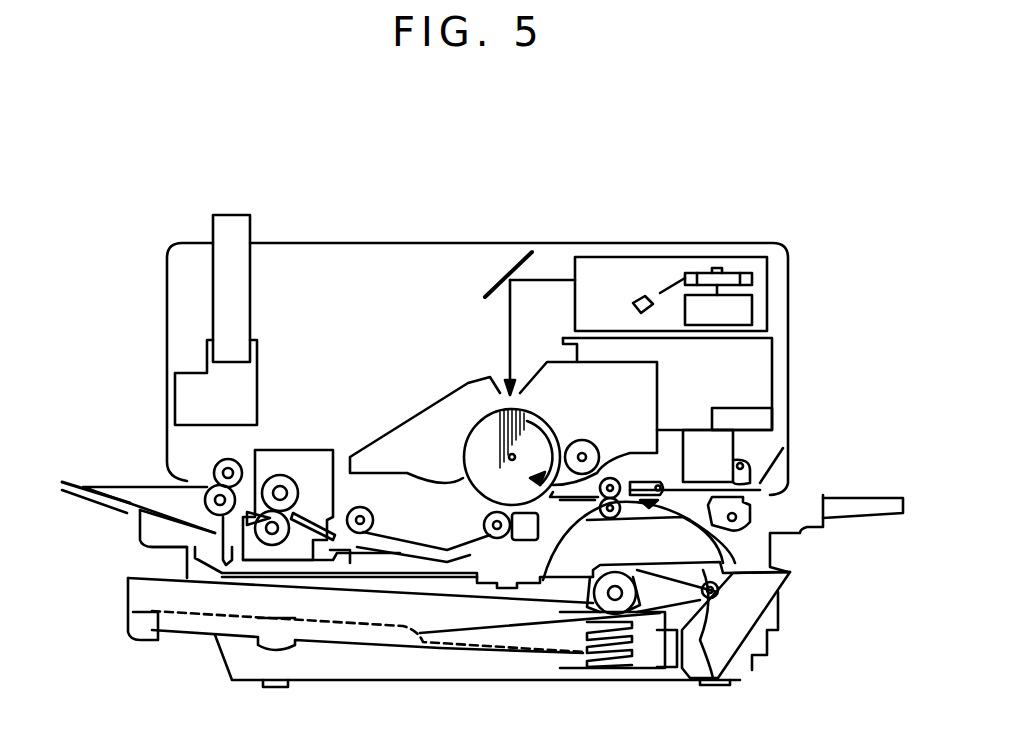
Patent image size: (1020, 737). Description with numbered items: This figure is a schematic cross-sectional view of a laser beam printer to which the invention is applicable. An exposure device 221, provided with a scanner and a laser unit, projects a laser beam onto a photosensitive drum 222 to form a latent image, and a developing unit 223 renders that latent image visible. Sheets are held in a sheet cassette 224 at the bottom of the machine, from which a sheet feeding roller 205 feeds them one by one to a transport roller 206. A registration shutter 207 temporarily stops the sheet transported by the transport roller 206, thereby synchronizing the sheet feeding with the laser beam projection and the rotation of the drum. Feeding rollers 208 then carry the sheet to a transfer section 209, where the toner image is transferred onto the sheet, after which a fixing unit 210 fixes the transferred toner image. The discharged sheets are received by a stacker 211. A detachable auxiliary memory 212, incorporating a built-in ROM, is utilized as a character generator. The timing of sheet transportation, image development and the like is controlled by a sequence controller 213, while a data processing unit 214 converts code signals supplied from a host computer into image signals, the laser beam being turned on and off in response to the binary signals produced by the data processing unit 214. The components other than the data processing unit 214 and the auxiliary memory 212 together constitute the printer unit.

The sheet feeding roller 205 is at (587, 603).
The transport roller 206 is at (710, 600).
The registration shutter 207 is at (637, 500).
The feeding rollers 208 is at (603, 517).
The transfer section 209 is at (517, 532).
The fixing unit 210 is at (283, 490).
The stacker 211 is at (118, 487).
The detachable auxiliary memory 212 is at (239, 233).
The sequence controller 213 is at (757, 422).
The data processing unit 214 is at (180, 397).
The exposure device 221 is at (772, 293).
The photosensitive drum 222 is at (635, 418).
The developing unit 223 is at (477, 423).
The sheet cassette 224 is at (128, 597).